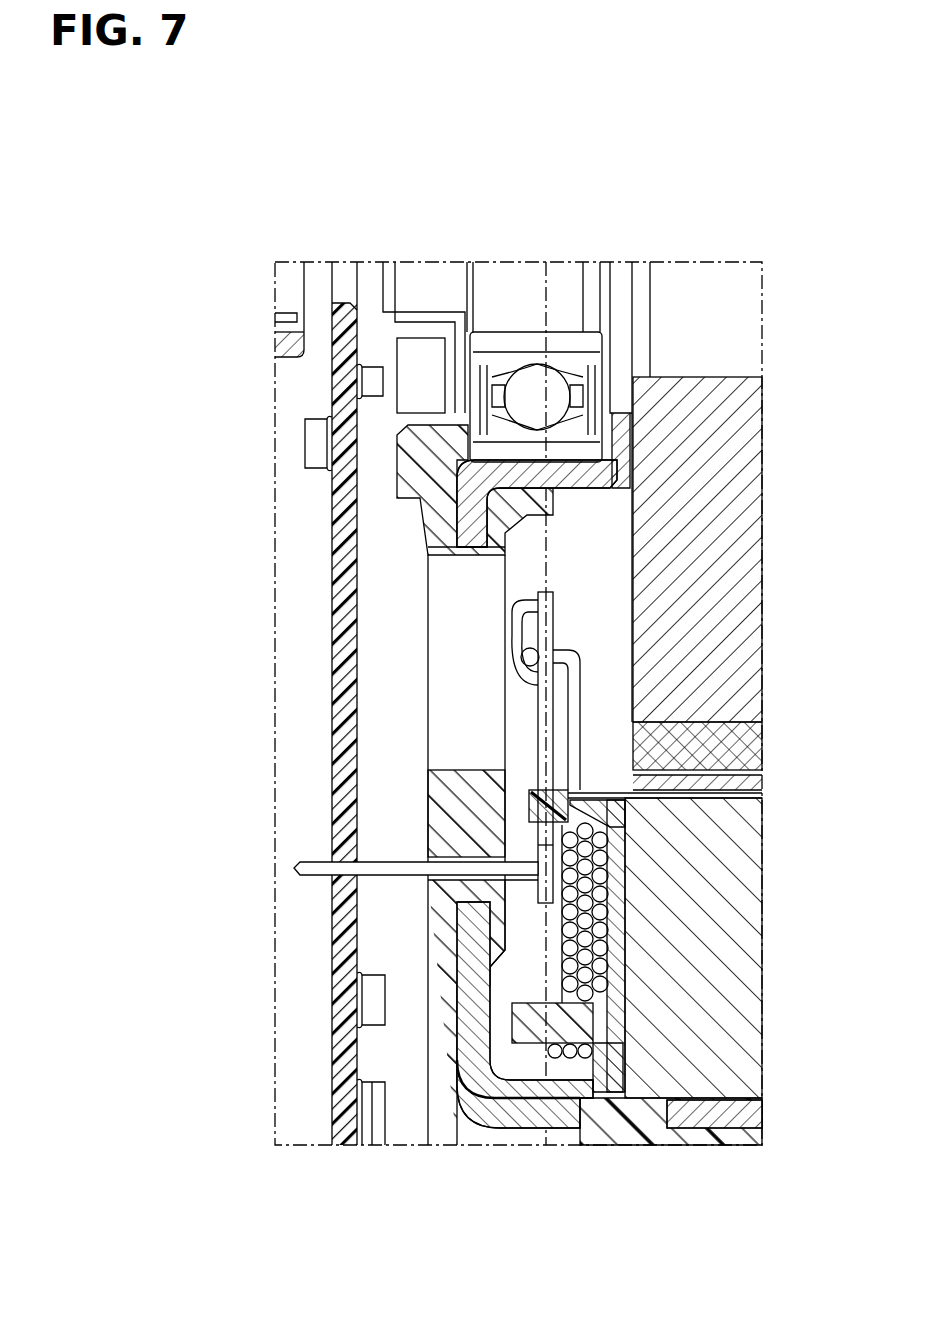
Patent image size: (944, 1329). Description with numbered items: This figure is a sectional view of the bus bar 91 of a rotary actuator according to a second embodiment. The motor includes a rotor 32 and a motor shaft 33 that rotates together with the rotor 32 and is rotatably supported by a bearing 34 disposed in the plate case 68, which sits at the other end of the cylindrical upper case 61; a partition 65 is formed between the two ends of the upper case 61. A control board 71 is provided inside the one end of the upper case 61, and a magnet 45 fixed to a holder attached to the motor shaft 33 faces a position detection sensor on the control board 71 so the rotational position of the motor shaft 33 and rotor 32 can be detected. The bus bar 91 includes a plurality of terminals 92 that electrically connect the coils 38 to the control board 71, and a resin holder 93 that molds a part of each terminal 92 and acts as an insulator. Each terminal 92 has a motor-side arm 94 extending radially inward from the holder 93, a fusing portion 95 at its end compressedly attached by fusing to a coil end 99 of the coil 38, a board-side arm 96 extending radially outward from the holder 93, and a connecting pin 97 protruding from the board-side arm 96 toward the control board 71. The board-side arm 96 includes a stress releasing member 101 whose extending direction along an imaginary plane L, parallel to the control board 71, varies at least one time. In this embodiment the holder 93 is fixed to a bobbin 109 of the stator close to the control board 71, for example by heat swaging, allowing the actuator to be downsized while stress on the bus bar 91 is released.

The imaginary plane L is at (550, 272).
The rotor 32 is at (740, 575).
The motor shaft 33 is at (705, 325).
The bearing 34 is at (528, 388).
The coils 38 is at (623, 917).
The magnet 45 is at (420, 383).
The upper case 61 is at (637, 1130).
The partition 65 is at (440, 1052).
The plate case 68 is at (745, 1110).
The control board 71 is at (335, 500).
The bus bar 91 is at (387, 745).
The terminals 92 is at (510, 623).
The holder 93 is at (530, 805).
The motor-side arm 94 is at (538, 715).
The fusing portion 95 is at (517, 650).
The board-side arm 96 is at (538, 855).
The connecting pin 97 is at (296, 868).
The coil end 99 is at (522, 658).
The stress releasing member 101 is at (452, 900).
The bobbin 109 is at (623, 853).